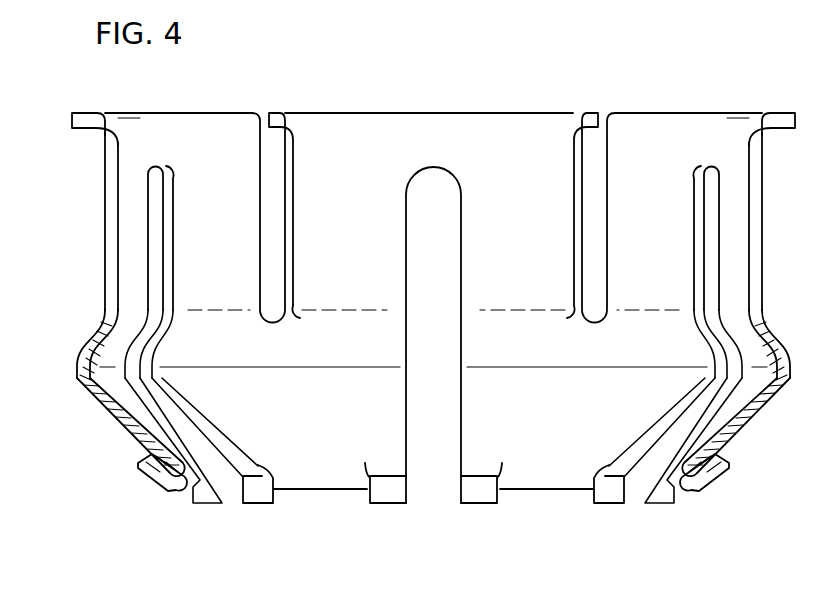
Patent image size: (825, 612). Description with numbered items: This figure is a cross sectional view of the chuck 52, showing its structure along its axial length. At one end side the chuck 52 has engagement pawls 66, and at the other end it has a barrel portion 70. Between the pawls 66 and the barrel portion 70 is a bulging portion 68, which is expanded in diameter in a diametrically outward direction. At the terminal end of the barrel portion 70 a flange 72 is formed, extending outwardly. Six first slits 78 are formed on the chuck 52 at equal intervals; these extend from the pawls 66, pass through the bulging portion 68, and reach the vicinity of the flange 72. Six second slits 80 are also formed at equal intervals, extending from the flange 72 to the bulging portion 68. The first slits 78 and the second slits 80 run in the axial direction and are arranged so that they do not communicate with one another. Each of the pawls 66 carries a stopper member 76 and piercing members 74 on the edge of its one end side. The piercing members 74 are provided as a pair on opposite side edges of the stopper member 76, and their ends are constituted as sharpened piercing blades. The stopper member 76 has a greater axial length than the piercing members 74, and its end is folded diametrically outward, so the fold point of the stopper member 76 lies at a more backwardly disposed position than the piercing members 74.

The chuck 52 is at (697, 55).
The pawls 66 is at (117, 424).
The bulging portion 68 is at (90, 332).
The barrel portion 70 is at (110, 198).
The flange 72 is at (86, 118).
The piercing members 74 is at (258, 495).
The stopper member 76 is at (185, 492).
The first slits 78 is at (445, 413).
The second slits 80 is at (597, 173).